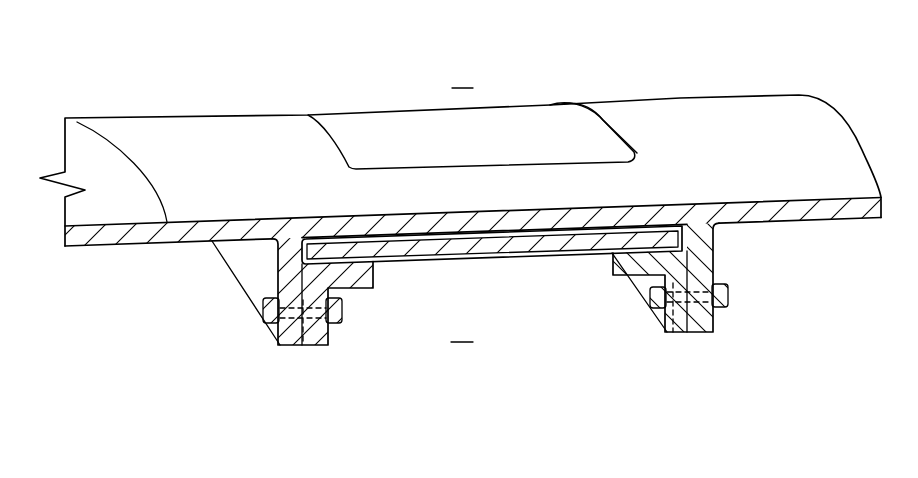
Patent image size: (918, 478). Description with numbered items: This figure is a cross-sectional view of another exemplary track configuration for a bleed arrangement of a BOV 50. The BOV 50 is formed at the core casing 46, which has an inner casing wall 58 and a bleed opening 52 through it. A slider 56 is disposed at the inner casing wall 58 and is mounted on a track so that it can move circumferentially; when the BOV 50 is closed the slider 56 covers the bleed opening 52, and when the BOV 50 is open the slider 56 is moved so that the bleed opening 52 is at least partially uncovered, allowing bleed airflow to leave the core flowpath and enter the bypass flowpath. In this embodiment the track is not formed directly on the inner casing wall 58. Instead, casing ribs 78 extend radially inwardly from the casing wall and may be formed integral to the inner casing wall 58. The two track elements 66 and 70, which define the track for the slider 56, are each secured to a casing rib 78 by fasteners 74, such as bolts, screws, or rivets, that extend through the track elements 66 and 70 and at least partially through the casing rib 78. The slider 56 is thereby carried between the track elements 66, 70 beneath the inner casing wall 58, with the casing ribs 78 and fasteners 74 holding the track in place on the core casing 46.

The BOV 50 is at (224, 49).
The core casing 46 is at (787, 110).
The bleed opening 52 is at (606, 110).
The inner casing wall 58 is at (97, 235).
The slider 56 is at (512, 246).
The track element 66 is at (352, 277).
The track element 70 is at (630, 270).
The fastener 74 is at (265, 315).
The casing rib 78 is at (293, 347).